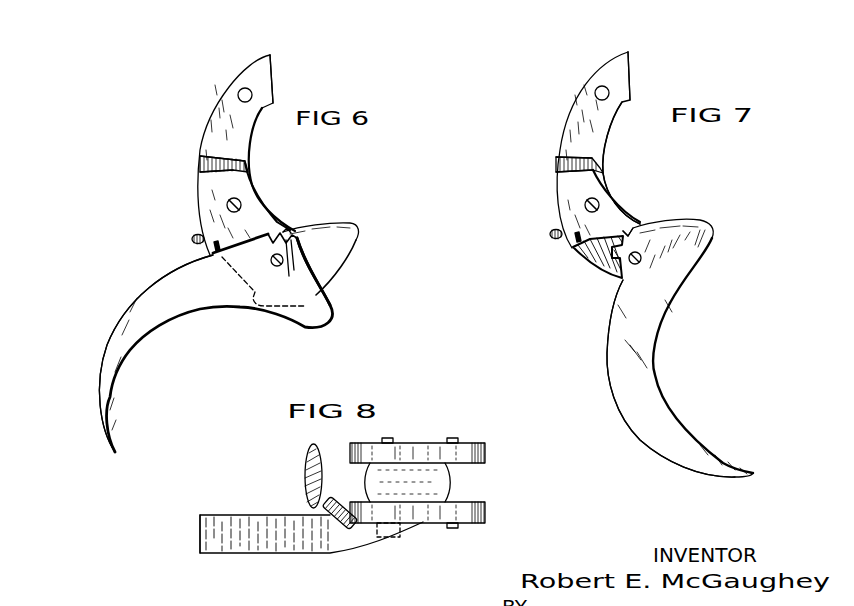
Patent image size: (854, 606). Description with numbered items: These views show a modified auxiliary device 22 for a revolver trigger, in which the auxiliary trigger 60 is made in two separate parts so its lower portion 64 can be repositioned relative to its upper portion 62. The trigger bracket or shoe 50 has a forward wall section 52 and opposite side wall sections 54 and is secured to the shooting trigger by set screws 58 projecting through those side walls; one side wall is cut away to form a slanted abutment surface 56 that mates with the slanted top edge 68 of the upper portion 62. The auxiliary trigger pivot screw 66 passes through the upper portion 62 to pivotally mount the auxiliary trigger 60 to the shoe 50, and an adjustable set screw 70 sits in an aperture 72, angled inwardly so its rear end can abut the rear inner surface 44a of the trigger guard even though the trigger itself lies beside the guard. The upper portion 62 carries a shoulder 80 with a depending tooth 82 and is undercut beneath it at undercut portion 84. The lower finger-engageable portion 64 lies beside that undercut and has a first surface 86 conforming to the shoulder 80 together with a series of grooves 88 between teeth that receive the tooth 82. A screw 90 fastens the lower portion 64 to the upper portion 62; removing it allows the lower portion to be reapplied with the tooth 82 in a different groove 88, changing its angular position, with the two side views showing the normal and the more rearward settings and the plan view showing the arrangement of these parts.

In FIG. 6, the auxiliary device 22 is at (347, 290).
In FIG. 8, the rear inner surface of trigger guard 44a is at (322, 476).
In FIG. 6, the trigger bracket or shoe 50 is at (257, 147).
In FIG. 7, the trigger bracket or shoe 50 is at (613, 128).
In FIG. 8, the trigger bracket or shoe 50 is at (492, 460).
In FIG. 7, the forward wall section 52 is at (605, 149).
In FIG. 8, the forward wall section 52 is at (455, 482).
In FIG. 6, the side wall sections 54 is at (272, 82).
In FIG. 7, the side wall sections 54 is at (632, 86).
In FIG. 8, the side wall sections 54 is at (423, 443).
In FIG. 6, the slanted abutment surface 56 is at (208, 157).
In FIG. 7, the slanted abutment surface 56 is at (572, 158).
In FIG. 8, the slanted abutment surface 56 is at (422, 521).
In FIG. 6, the set screws 58 is at (240, 91).
In FIG. 7, the set screws 58 is at (598, 90).
In FIG. 8, the set screws 58 is at (390, 437).
In FIG. 6, the auxiliary trigger 60 is at (172, 330).
In FIG. 7, the auxiliary trigger 60 is at (673, 407).
In FIG. 8, the auxiliary trigger 60 is at (319, 559).
In FIG. 6, the upper portion 62 is at (203, 193).
In FIG. 7, the upper portion 62 is at (557, 190).
In FIG. 6, the lower finger engageable portion 64 is at (100, 352).
In FIG. 7, the lower finger engageable portion 64 is at (610, 396).
In FIG. 8, the lower finger engageable portion 64 is at (253, 555).
In FIG. 6, the auxiliary trigger pivot screw 66 is at (242, 206).
In FIG. 7, the auxiliary trigger pivot screw 66 is at (600, 204).
In FIG. 8, the auxiliary trigger pivot screw 66 is at (388, 538).
In FIG. 6, the top edge 68 is at (198, 165).
In FIG. 7, the top edge 68 is at (557, 165).
In FIG. 6, the adjustable set screw 70 is at (191, 239).
In FIG. 7, the adjustable set screw 70 is at (549, 237).
In FIG. 8, the adjustable set screw 70 is at (337, 497).
In FIG. 6, the aperture 72 is at (222, 240).
In FIG. 7, the aperture 72 is at (575, 236).
In FIG. 6, the shoulder 80 is at (353, 238).
In FIG. 7, the shoulder 80 is at (681, 228).
In FIG. 6, the tooth 82 is at (289, 230).
In FIG. 7, the tooth 82 is at (631, 231).
In FIG. 6, the undercut portion 84 is at (346, 258).
In FIG. 6, the first surface 86 is at (330, 310).
In FIG. 7, the first surface 86 is at (700, 242).
In FIG. 6, the grooves 88 is at (264, 273).
In FIG. 7, the grooves 88 is at (580, 258).
In FIG. 6, the screw 90 is at (270, 262).
In FIG. 7, the screw 90 is at (637, 266).